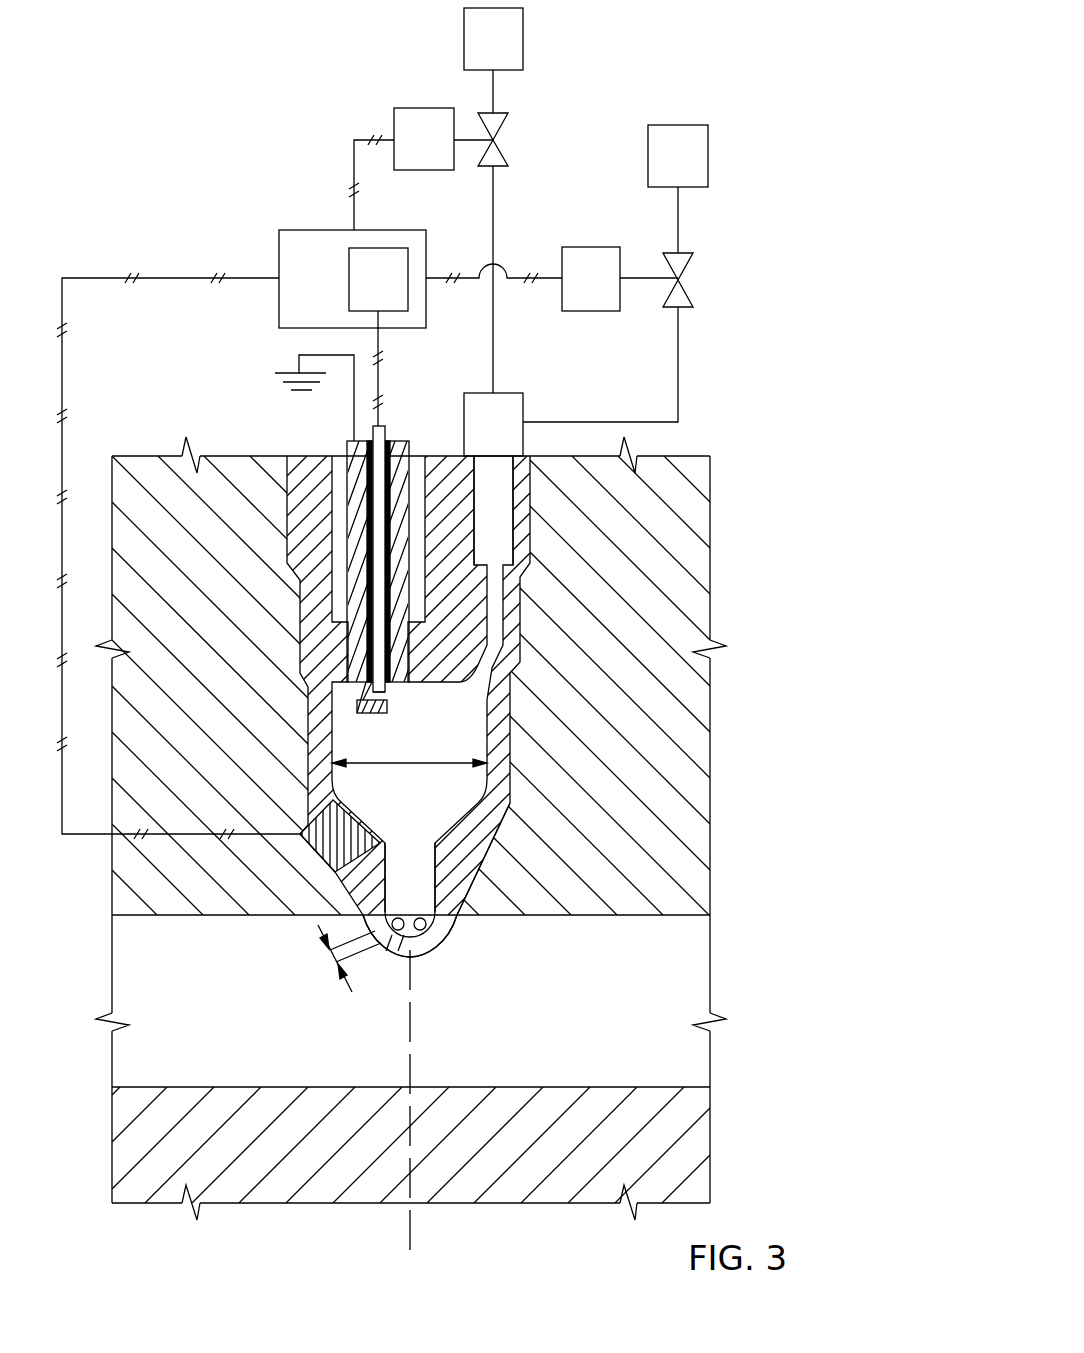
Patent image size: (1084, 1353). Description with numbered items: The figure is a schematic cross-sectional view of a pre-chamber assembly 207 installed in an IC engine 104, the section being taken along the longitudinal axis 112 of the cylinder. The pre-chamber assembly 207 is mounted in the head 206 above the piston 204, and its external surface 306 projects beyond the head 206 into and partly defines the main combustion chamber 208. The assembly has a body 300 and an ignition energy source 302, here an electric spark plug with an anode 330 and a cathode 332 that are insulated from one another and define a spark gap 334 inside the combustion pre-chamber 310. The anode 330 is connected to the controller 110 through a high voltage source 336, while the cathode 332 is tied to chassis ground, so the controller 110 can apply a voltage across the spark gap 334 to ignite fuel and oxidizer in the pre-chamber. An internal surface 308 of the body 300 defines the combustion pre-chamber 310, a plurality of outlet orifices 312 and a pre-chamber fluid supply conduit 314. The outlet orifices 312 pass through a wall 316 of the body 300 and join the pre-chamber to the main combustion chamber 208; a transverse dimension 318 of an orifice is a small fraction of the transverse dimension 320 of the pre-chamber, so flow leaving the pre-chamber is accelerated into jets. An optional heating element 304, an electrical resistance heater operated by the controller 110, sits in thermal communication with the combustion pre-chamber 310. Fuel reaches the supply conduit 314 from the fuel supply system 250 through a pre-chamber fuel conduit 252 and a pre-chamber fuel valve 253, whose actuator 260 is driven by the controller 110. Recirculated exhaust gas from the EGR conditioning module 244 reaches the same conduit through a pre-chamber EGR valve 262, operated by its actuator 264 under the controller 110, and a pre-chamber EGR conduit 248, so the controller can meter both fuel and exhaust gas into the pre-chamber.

The IC engine 104 is at (711, 46).
The EGR conditioning module 244 is at (506, 52).
The actuator 264 is at (436, 151).
The pre-chamber EGR valve 262 is at (507, 144).
The fuel supply system 250 is at (690, 170).
The controller 110 is at (328, 291).
The high voltage source 336 is at (390, 291).
The actuator 260 is at (603, 292).
The pre-chamber fuel valve 253 is at (693, 283).
The pre-chamber EGR conduit 248 is at (494, 347).
The pre-chamber fuel conduit 252 is at (680, 350).
The anode 330 is at (386, 428).
The ignition energy source 302 is at (347, 446).
The pre-chamber assembly 207 is at (267, 499).
The body 300 is at (299, 632).
The pre-chamber fluid supply conduit 314 is at (503, 614).
The cathode 332 is at (357, 704).
The spark gap 334 is at (386, 697).
The transverse dimension 320 is at (410, 760).
The combustion pre-chamber 310 is at (395, 802).
The internal surface 308 is at (461, 822).
The head 206 is at (710, 786).
The heating element 304 is at (317, 857).
The outlet orifices 312 is at (446, 932).
The external surface 306 is at (434, 956).
The transverse dimension 318 is at (330, 964).
The wall 316 is at (402, 952).
The main combustion chamber 208 is at (592, 1027).
The piston 204 is at (534, 1150).
The longitudinal axis 112 is at (413, 1236).